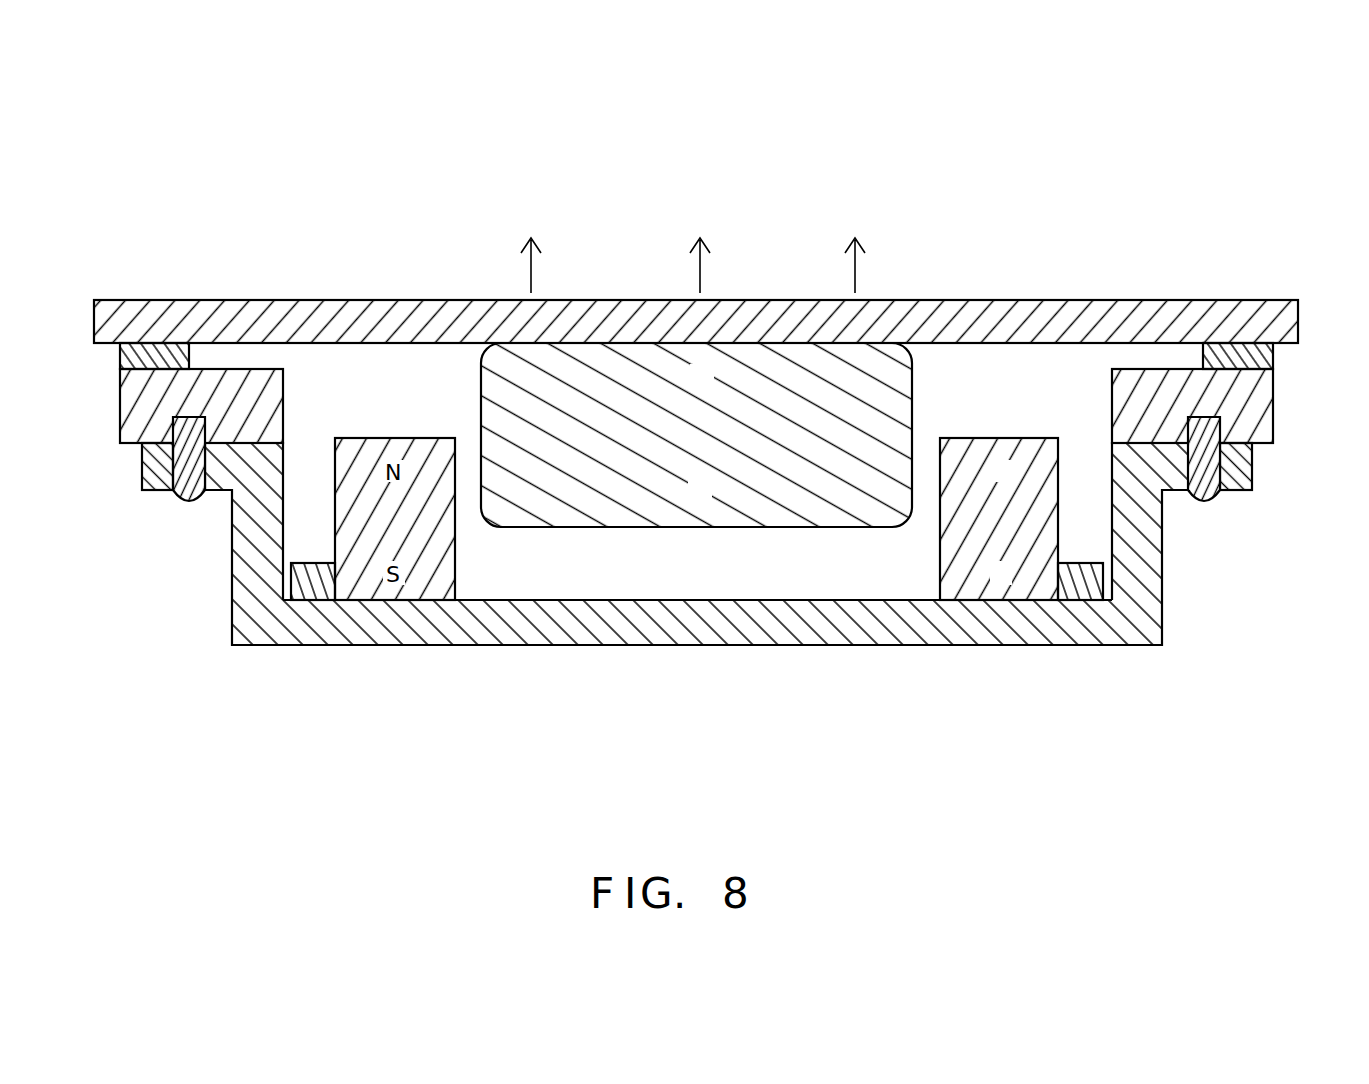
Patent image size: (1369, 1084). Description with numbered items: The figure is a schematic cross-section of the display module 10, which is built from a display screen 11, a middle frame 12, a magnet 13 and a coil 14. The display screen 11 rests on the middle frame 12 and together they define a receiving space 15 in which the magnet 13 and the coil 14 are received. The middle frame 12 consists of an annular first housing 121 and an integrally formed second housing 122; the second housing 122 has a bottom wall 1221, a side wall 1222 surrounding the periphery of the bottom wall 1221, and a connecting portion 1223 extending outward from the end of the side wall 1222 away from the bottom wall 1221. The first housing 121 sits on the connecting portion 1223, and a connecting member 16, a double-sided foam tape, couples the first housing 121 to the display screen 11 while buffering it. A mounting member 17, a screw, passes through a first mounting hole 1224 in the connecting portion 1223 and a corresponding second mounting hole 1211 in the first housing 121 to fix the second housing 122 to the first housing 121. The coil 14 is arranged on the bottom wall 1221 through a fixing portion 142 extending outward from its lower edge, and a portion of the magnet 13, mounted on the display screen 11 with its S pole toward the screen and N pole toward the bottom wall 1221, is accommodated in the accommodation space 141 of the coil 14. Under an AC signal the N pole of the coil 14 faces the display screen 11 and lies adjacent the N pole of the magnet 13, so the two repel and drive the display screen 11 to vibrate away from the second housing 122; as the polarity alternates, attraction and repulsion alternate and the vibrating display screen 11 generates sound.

The display module 10 is at (683, 115).
The display screen 11 is at (313, 327).
The middle frame 12 is at (1290, 530).
The magnet 13 is at (620, 383).
The coil 14 is at (957, 573).
The accommodation space 141 is at (615, 565).
The fixing portion 142 is at (1085, 583).
The receiving space 15 is at (1025, 385).
The connecting member 16 is at (1225, 358).
The mounting member 17 is at (1200, 494).
The first housing 121 is at (145, 405).
The second mounting hole 1211 is at (1222, 423).
The second housing 122 is at (168, 725).
The bottom wall 1221 is at (375, 632).
The side wall 1222 is at (265, 570).
The connecting portion 1223 is at (157, 473).
The first mounting hole 1224 is at (1222, 468).